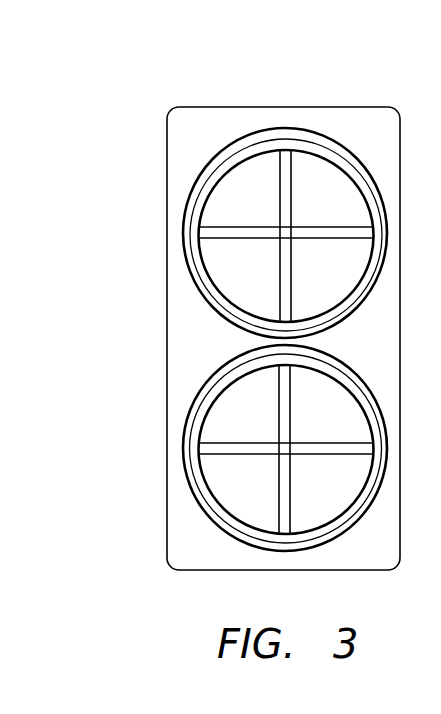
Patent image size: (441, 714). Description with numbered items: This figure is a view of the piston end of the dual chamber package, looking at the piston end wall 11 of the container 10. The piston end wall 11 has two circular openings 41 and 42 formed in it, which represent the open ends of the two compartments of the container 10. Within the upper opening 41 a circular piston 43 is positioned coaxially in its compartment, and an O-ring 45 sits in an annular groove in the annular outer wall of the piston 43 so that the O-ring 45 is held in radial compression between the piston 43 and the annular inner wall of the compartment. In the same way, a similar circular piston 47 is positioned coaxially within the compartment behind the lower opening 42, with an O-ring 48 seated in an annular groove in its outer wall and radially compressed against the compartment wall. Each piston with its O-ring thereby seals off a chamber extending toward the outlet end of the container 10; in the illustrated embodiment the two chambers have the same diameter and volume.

The container 10 is at (251, 101).
The piston end wall 11 is at (382, 349).
The circular opening 41 is at (203, 292).
The circular opening 42 is at (203, 508).
The circular piston 43 is at (336, 278).
The O-ring 45 is at (386, 217).
The circular piston 47 is at (337, 493).
The O-ring 48 is at (387, 432).